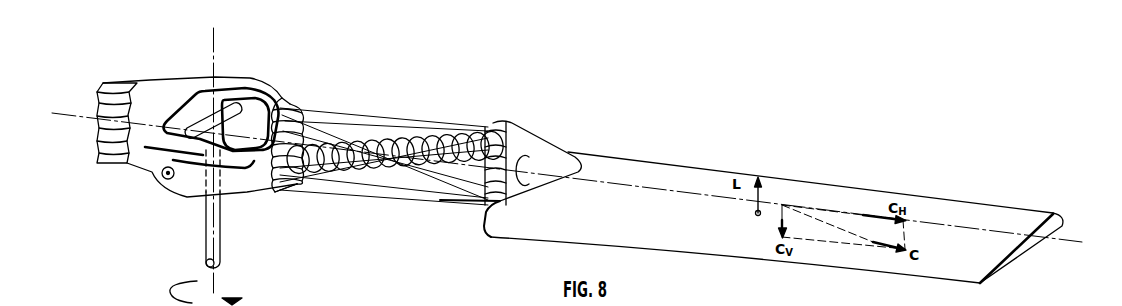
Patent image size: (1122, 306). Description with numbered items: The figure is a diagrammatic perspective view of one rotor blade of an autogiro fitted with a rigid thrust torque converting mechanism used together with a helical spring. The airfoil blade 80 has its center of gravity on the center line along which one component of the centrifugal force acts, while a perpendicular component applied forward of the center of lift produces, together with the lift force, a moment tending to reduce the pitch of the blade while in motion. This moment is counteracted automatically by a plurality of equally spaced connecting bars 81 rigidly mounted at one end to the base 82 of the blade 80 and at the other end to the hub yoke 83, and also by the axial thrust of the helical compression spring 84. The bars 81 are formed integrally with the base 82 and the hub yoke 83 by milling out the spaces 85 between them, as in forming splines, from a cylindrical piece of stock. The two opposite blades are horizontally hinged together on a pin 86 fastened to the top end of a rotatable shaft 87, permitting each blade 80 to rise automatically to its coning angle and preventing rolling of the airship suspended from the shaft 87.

The airfoil blade 80 is at (713, 249).
The connecting means or bars 81 is at (397, 136).
The base of the blade 82 is at (531, 139).
The hub yoke 83 is at (250, 185).
The helical compression spring 84 is at (320, 167).
The spaces between the bars 85 is at (428, 185).
The pin 86 is at (162, 176).
The rotatable shaft 87 is at (219, 232).